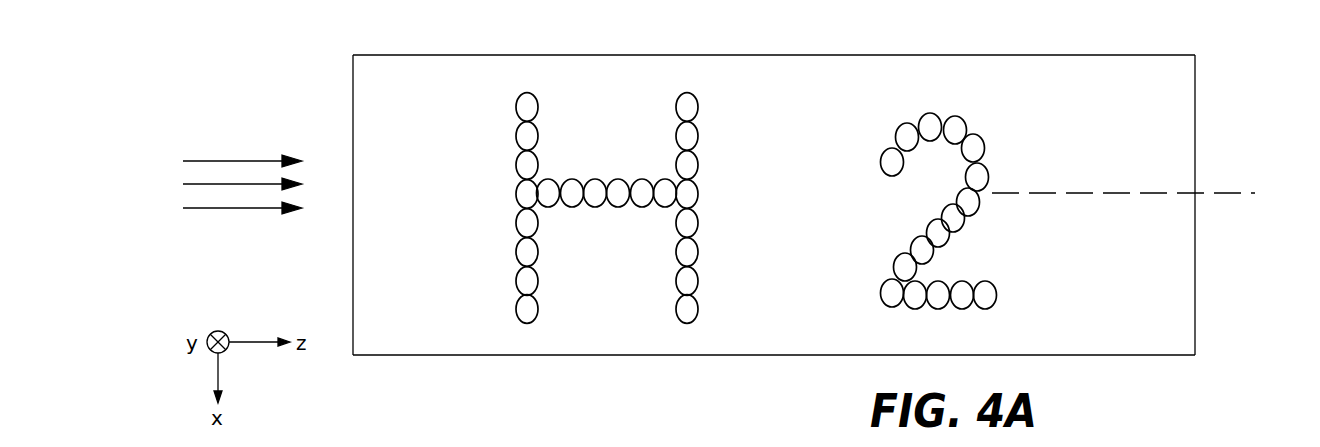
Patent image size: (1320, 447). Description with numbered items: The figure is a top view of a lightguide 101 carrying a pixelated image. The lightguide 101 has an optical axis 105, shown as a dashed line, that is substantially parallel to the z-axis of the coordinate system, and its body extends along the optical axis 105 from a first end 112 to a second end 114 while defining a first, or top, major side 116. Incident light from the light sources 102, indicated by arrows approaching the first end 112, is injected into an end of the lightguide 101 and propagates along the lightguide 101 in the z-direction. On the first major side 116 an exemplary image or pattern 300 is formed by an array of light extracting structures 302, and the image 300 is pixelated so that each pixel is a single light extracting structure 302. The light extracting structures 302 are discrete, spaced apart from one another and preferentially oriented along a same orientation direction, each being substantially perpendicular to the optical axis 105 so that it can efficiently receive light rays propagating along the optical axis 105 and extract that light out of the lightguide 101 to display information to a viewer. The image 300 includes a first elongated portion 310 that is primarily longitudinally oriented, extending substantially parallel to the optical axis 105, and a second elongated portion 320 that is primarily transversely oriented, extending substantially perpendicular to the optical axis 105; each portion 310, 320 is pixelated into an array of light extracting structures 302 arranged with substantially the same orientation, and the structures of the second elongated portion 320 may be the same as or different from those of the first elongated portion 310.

The lightguide 101 is at (280, 115).
The light sources 102 is at (235, 210).
The optical axis 105 is at (1213, 193).
The first end 112 is at (352, 92).
The second end 114 is at (1195, 75).
The first major side 116 is at (1097, 102).
The image 300 is at (695, 215).
The light extracting structures 302 is at (927, 113).
The first elongated portion 310 is at (540, 218).
The second elongated portion 320 is at (507, 105).